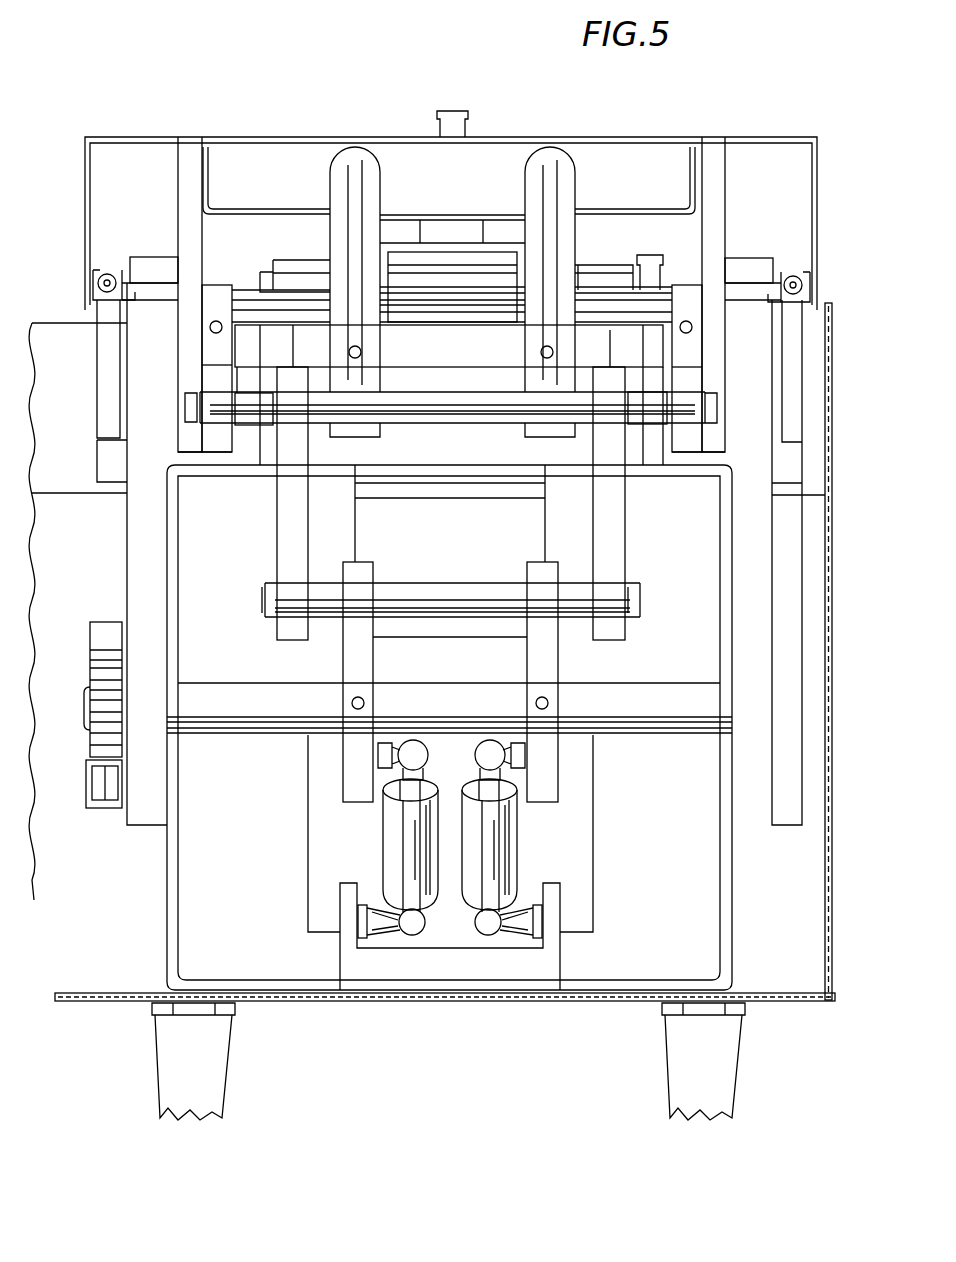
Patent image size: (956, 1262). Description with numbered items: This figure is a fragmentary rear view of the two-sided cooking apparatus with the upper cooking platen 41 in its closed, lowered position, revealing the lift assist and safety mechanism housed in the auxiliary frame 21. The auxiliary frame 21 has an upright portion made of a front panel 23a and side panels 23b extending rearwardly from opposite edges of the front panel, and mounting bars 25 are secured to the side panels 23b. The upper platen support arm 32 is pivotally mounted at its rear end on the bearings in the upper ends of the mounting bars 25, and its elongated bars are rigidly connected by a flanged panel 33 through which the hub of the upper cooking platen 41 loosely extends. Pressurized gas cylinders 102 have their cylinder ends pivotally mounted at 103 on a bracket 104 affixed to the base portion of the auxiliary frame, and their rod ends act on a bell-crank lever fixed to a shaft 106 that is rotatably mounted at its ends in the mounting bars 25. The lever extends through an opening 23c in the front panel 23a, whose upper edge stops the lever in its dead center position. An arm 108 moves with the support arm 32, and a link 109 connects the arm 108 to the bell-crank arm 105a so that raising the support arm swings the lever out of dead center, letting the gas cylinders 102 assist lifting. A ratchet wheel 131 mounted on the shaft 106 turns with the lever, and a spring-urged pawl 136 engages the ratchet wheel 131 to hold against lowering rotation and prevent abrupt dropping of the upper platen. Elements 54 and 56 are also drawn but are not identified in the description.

The auxiliary frame 21 is at (144, 861).
The front panel 23a is at (248, 540).
The side panels 23b is at (180, 669).
The opening 23c is at (308, 836).
The mounting bars 25 is at (143, 533).
The upper platen support arm 32 is at (712, 184).
The flanged panel 33 is at (603, 214).
The upper cooking platen 41 is at (787, 467).
The guide post 54 is at (550, 160).
The top plate 56 is at (645, 137).
The pressurized gas cylinders 102 is at (515, 845).
The cylinder end pivot 103 is at (410, 935).
The bracket 104 is at (545, 970).
The arm 105a is at (545, 661).
The shaft 106 is at (492, 757).
The arm 108 is at (686, 432).
The link 109 is at (607, 548).
The ratchet wheel 131 is at (98, 727).
The pawl 136 is at (92, 660).